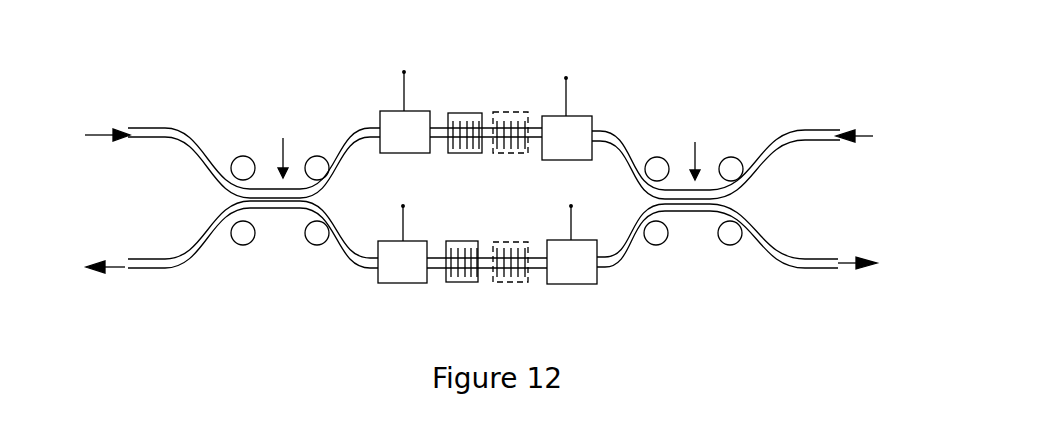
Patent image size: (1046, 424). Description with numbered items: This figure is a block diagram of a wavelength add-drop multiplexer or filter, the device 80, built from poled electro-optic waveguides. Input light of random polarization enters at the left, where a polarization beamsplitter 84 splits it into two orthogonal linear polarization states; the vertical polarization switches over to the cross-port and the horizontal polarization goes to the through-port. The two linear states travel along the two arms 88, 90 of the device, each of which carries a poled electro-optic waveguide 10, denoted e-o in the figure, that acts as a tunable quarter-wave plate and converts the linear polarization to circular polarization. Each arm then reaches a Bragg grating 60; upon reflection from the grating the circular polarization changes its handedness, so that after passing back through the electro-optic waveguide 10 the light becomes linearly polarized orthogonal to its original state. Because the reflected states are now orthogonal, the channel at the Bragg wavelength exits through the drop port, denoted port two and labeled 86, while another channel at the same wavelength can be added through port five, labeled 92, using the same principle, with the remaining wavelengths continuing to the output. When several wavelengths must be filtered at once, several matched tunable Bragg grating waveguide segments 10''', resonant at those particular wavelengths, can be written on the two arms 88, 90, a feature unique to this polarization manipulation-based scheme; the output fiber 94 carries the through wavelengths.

The wavelength add-drop multiplexer device 80 is at (189, 62).
The polarization beamsplitter 84 is at (272, 203).
The port 2 (drop port) 86 is at (136, 143).
The first arm 88 is at (365, 129).
The second arm 90 is at (376, 265).
The port 5 (add port) 92 is at (808, 127).
The output port fiber 94 is at (808, 268).
The poled electro-optic waveguide 10 is at (449, 167).
The tunable Bragg grating waveguide segment 10''' is at (571, 143).
The Bragg grating 60 is at (463, 112).